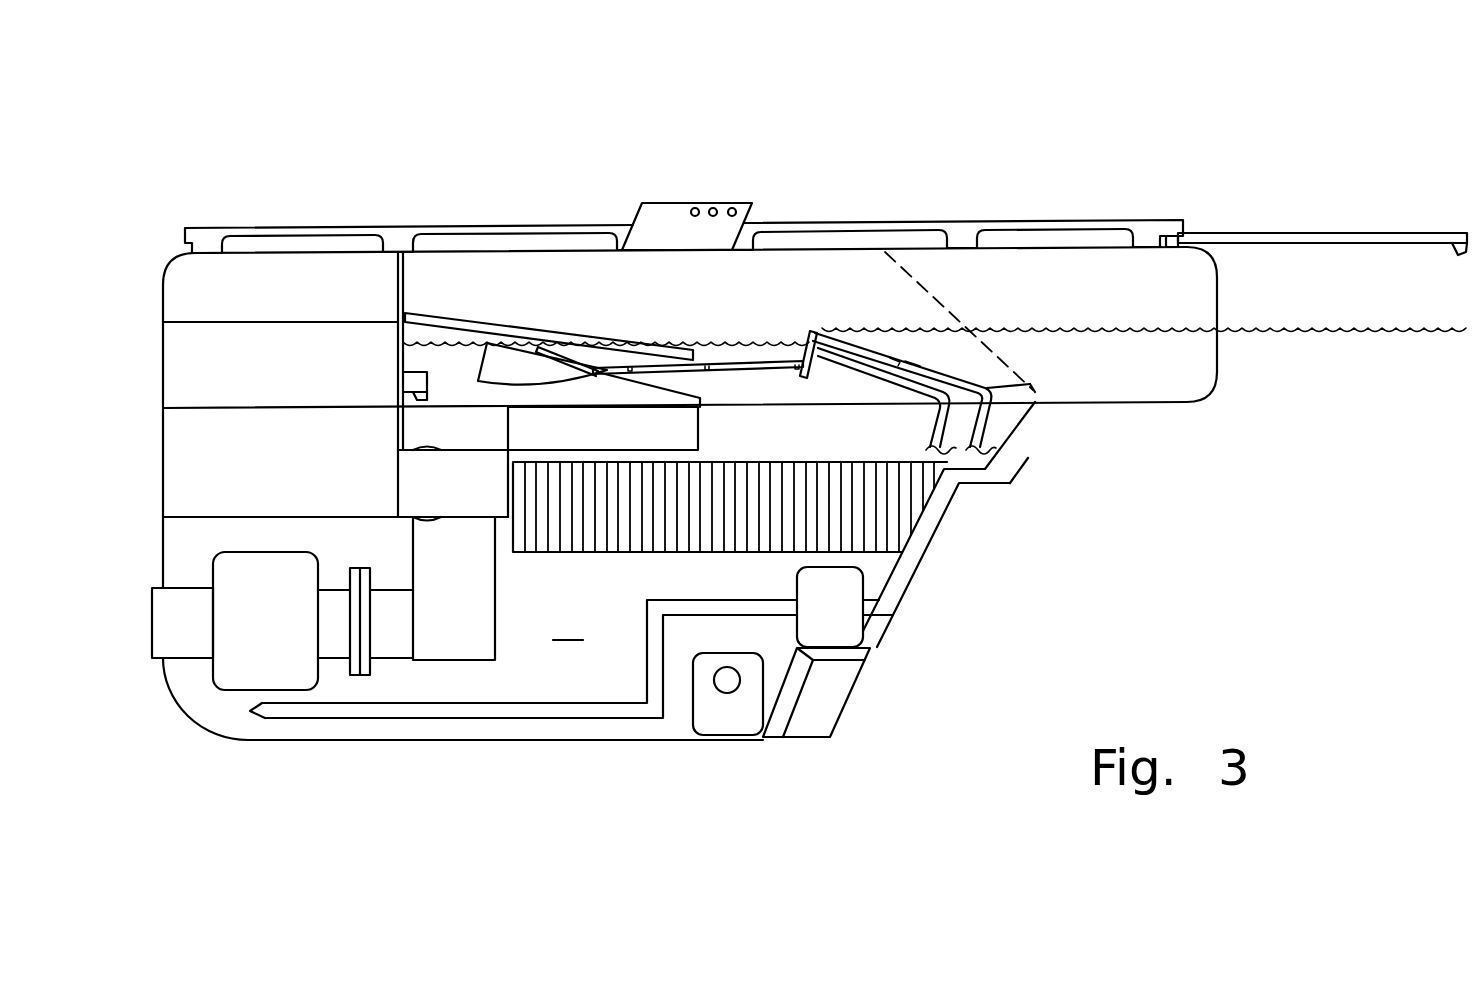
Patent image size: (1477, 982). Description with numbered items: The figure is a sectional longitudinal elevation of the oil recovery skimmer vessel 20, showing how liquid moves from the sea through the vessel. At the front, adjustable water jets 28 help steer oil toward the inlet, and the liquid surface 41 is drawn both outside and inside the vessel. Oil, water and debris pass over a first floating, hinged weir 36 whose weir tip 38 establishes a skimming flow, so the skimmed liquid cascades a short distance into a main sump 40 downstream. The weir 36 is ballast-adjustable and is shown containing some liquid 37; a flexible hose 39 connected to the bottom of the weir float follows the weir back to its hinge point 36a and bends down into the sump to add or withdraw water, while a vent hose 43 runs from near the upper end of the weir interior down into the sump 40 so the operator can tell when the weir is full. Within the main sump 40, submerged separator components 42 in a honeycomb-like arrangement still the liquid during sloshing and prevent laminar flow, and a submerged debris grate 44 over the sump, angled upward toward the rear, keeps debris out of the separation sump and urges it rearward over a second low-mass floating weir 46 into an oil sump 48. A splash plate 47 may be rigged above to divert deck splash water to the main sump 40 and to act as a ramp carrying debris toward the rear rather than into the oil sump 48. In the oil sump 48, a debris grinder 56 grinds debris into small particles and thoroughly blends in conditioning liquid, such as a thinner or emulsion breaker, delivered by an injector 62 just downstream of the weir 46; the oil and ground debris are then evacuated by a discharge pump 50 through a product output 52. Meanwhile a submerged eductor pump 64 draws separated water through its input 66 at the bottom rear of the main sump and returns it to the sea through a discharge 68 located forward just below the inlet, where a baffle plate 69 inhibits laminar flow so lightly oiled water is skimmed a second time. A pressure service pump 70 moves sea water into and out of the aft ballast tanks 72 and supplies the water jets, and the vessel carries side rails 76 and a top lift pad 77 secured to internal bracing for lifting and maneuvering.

The oil recovery skimmer vessel 20 is at (1003, 191).
The water jets 28 is at (1452, 252).
The first floating hinged weir 36 is at (875, 337).
The hinge point 36a is at (1032, 388).
The liquid inside the weir 37 is at (820, 352).
The weir tip 38 is at (811, 330).
The flexible hose 39 is at (1031, 386).
The main sump 40 is at (1005, 420).
The liquid surface 41 is at (1285, 328).
The separator components 42 is at (855, 462).
The vent hose 43 is at (937, 428).
The debris grate 44 is at (570, 347).
The second floating weir 46 is at (495, 343).
The splash plate 47 is at (458, 314).
The oil sump 48 is at (400, 430).
The discharge pump 50 is at (215, 668).
The product output 52 is at (152, 625).
The debris grinder 56 is at (400, 480).
The conditioning liquid injector 62 is at (428, 385).
The eductor pump 64 is at (850, 630).
The eductor pump input 66 is at (248, 740).
The eductor pump discharge 68 is at (1056, 460).
The baffle plate 69 is at (1015, 487).
The pressure service pump 70 is at (727, 735).
The aft ballast tanks 72 is at (163, 468).
The side rails 76 is at (268, 229).
The top lift pads 77 is at (696, 203).